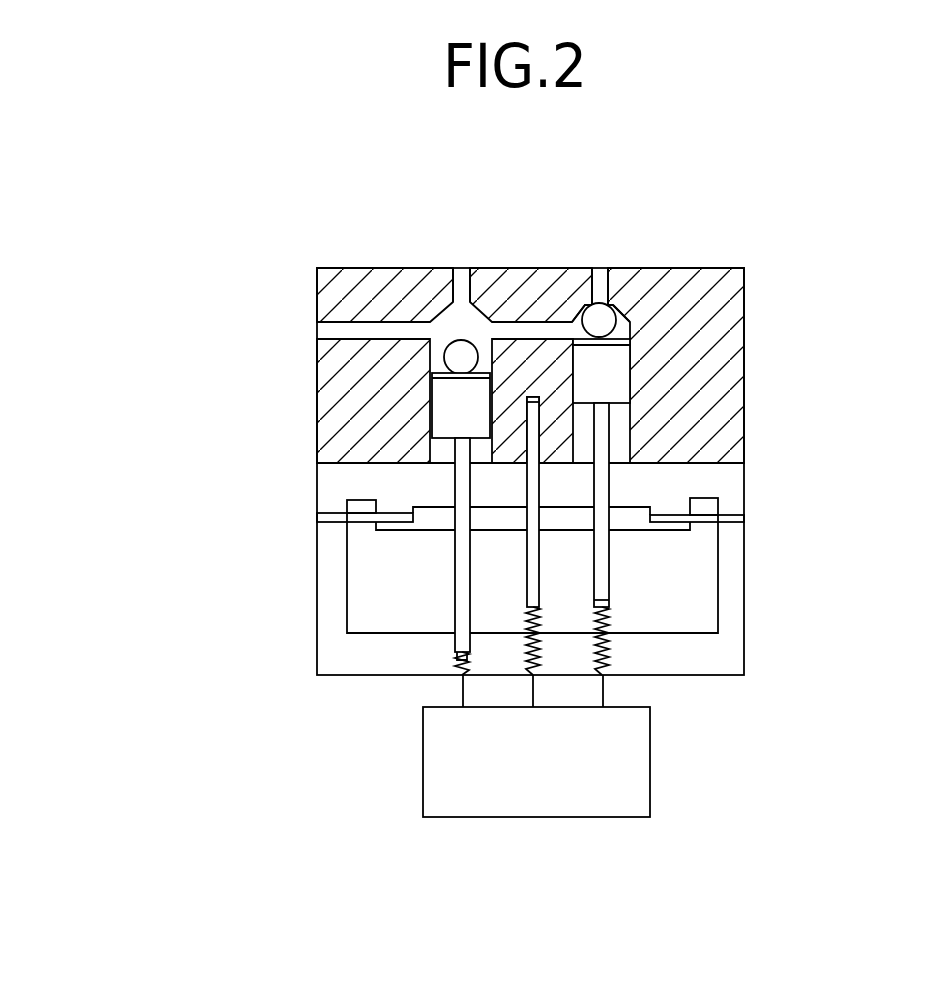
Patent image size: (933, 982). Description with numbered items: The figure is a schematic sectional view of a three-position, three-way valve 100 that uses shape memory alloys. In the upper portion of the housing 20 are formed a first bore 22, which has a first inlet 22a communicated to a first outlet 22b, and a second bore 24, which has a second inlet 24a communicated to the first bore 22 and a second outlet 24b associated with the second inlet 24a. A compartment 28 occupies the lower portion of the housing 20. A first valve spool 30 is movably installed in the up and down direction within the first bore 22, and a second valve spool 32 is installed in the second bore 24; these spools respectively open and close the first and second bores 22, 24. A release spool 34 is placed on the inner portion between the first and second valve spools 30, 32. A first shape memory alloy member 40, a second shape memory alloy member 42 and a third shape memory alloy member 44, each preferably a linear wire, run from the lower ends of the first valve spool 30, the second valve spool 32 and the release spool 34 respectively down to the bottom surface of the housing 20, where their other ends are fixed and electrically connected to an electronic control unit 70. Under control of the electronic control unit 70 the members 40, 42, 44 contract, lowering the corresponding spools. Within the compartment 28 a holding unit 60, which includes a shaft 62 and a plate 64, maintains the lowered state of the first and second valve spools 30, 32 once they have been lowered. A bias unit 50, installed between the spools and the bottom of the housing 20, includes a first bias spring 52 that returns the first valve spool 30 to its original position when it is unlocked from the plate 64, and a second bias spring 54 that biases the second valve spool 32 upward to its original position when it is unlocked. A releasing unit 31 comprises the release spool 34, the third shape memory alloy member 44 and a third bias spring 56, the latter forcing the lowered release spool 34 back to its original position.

The 3-position 3-way valve 100 is at (272, 241).
The housing 20 is at (744, 313).
The first bore 22 is at (485, 332).
The first inlet 22a is at (462, 285).
The first outlet 22b is at (356, 331).
The second bore 24 is at (616, 325).
The second inlet 24a is at (538, 328).
The second outlet 24b is at (597, 285).
The compartment 28 is at (332, 492).
The first valve spool 30 is at (462, 567).
The releasing unit 31 is at (550, 558).
The second valve spool 32 is at (602, 490).
The release spool 34 is at (540, 488).
The first shape memory alloy member 40 is at (463, 668).
The second shape memory alloy member 42 is at (608, 612).
The third shape memory alloy member 44 is at (605, 692).
The bias unit 50 is at (630, 667).
The first bias spring 52 is at (453, 655).
The second bias spring 54 is at (610, 650).
The third bias spring 56 is at (533, 668).
The holding unit 60 is at (386, 620).
The shaft 62 is at (745, 522).
The plate 64 is at (368, 613).
The electronic control unit (ECU) 70 is at (612, 817).